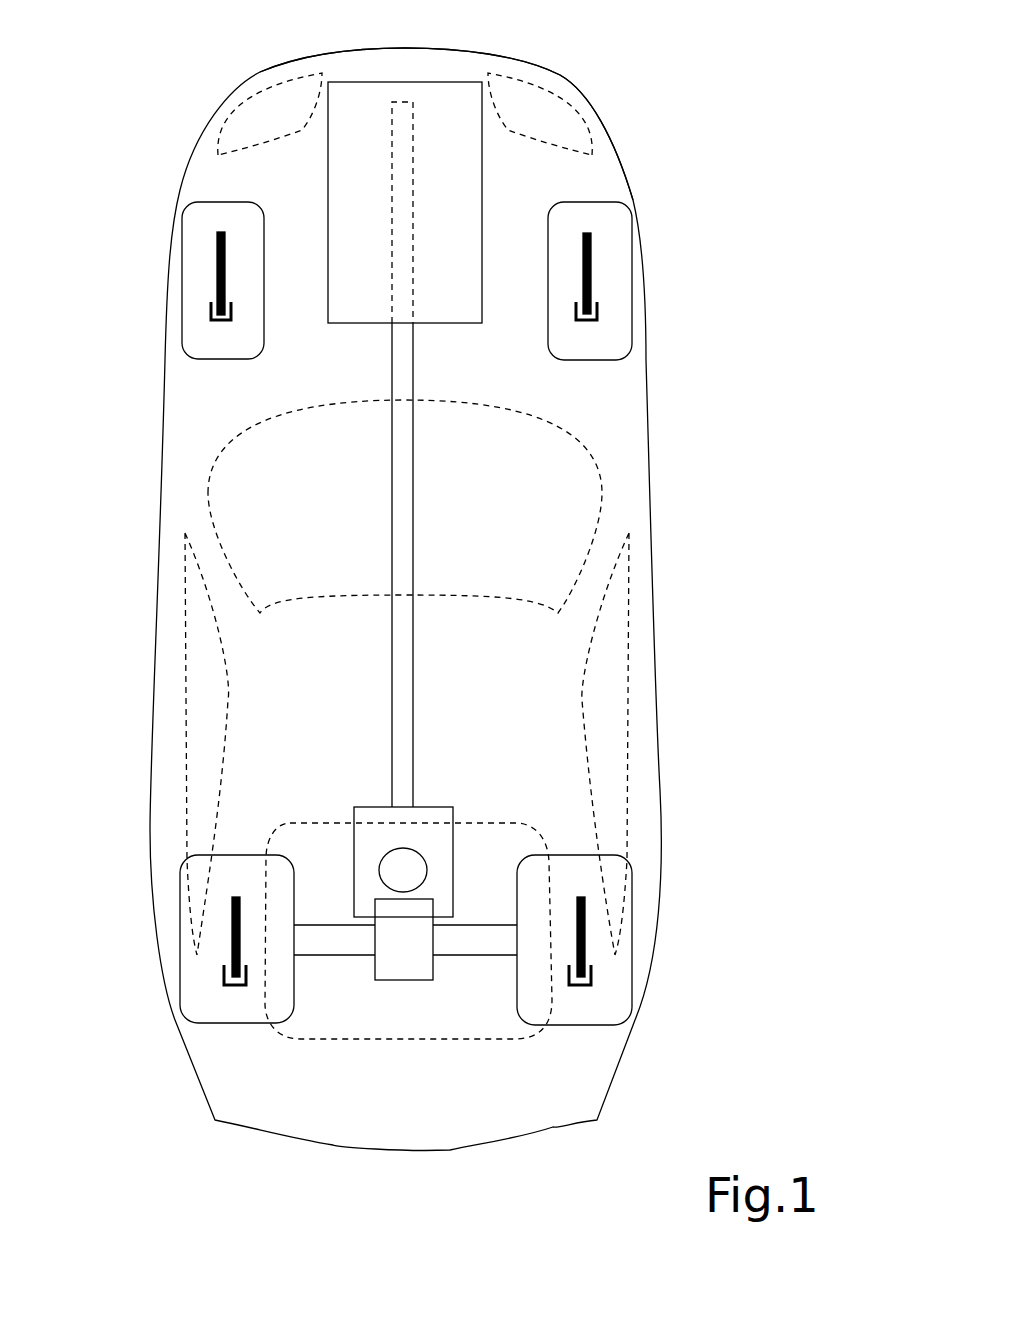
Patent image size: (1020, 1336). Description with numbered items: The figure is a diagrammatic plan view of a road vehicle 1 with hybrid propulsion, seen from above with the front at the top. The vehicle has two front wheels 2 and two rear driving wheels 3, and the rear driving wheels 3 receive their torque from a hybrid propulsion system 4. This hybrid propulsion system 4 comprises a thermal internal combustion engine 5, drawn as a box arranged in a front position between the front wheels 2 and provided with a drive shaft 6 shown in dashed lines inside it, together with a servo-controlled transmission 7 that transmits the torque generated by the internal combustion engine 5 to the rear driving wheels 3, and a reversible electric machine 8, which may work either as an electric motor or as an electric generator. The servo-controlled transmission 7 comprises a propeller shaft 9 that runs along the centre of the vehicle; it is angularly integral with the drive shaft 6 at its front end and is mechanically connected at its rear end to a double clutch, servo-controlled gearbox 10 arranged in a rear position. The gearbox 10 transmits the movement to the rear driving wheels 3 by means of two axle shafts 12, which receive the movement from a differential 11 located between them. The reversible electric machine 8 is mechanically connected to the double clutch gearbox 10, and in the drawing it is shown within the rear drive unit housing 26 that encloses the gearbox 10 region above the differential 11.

The road vehicle 1 is at (133, 1090).
The front wheels 2 is at (203, 348).
The rear driving wheels 3 is at (190, 977).
The hybrid propulsion system 4 is at (655, 182).
The thermal internal combustion engine 5 is at (457, 90).
The drive shaft 6 is at (407, 185).
The servo-controlled transmission 7 is at (667, 628).
The reversible electric machine 8 is at (403, 870).
The propeller shaft 9 is at (402, 647).
The double clutch servo-controlled gearbox 10 is at (458, 813).
The differential 11 is at (404, 939).
The axle shafts 12 is at (322, 948).
The drive unit housing 26 is at (358, 805).